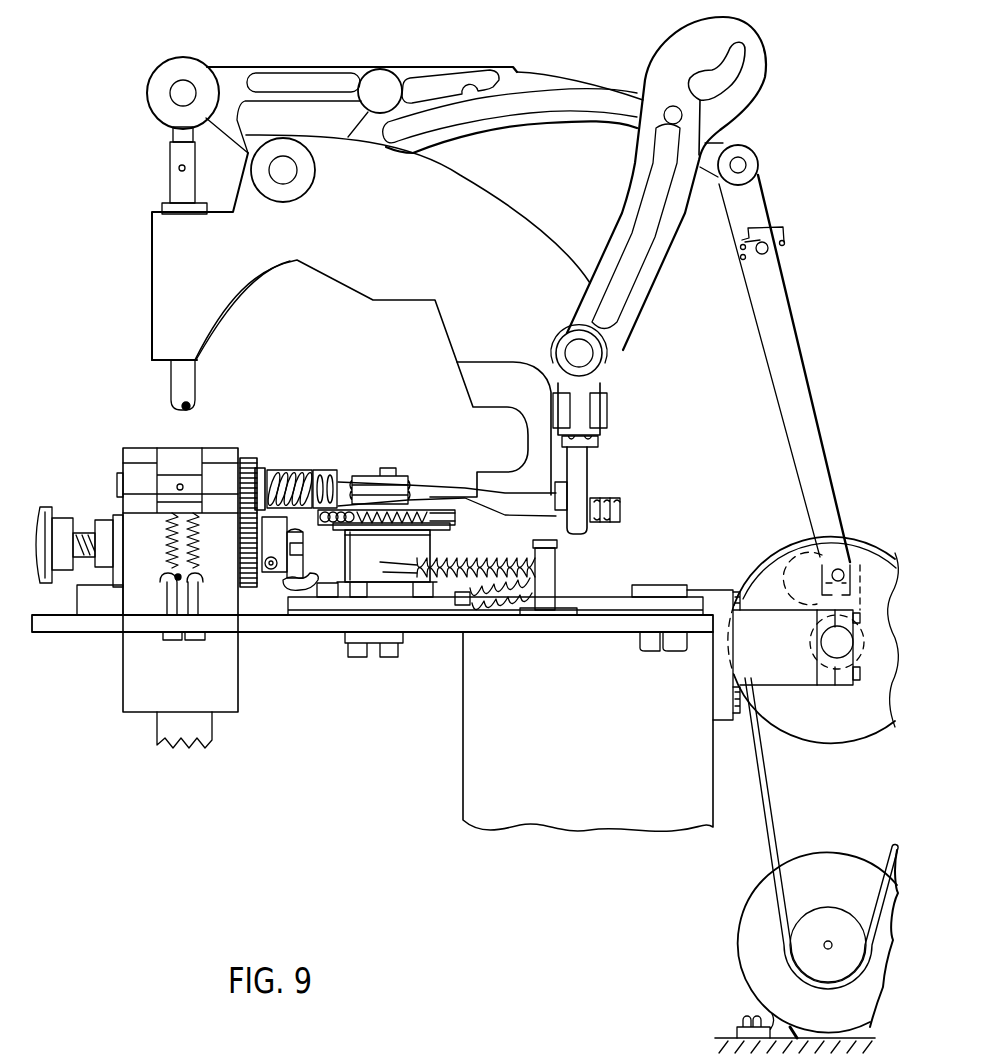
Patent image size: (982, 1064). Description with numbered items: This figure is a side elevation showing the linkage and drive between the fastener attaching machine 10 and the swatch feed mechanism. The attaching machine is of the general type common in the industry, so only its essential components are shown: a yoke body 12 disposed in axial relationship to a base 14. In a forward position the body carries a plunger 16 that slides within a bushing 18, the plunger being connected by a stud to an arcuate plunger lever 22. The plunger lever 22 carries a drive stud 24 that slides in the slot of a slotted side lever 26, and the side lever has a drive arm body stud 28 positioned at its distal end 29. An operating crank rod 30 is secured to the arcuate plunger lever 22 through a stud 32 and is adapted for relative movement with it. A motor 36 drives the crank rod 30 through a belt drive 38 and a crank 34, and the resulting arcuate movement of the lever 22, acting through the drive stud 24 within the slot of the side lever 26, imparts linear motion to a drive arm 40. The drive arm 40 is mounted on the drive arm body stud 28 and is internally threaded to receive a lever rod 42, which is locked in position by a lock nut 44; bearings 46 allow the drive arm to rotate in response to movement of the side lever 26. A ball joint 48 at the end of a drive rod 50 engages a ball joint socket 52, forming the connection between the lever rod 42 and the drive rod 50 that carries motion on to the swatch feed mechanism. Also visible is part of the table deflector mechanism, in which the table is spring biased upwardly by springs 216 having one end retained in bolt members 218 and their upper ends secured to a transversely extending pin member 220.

The fastener attaching machine 10 is at (357, 201).
The yoke body 12 is at (460, 333).
The base 14 is at (470, 735).
The plunger 16 is at (190, 382).
The bushing 18 is at (144, 205).
The arcuate plunger lever 22 is at (545, 85).
The drive stud 24 is at (668, 110).
The slotted side lever 26 is at (755, 88).
The drive arm body stud 28 is at (575, 347).
The distal end 29 is at (613, 357).
The operating crank rod 30 is at (800, 377).
The stud 32 is at (750, 163).
The crank 34 is at (810, 600).
The motor 36 is at (747, 952).
The belt drive 38 is at (770, 844).
The drive arm 40 is at (595, 388).
The lever rod 42 is at (592, 480).
The lock nut 44 is at (597, 442).
The bearings 46 is at (567, 523).
The ball joint 48 is at (565, 490).
The drive rod 50 is at (535, 505).
The ball joint socket 52 is at (580, 533).
The springs 216 is at (197, 563).
The bolt members 218 is at (197, 597).
The pin member 220 is at (163, 503).